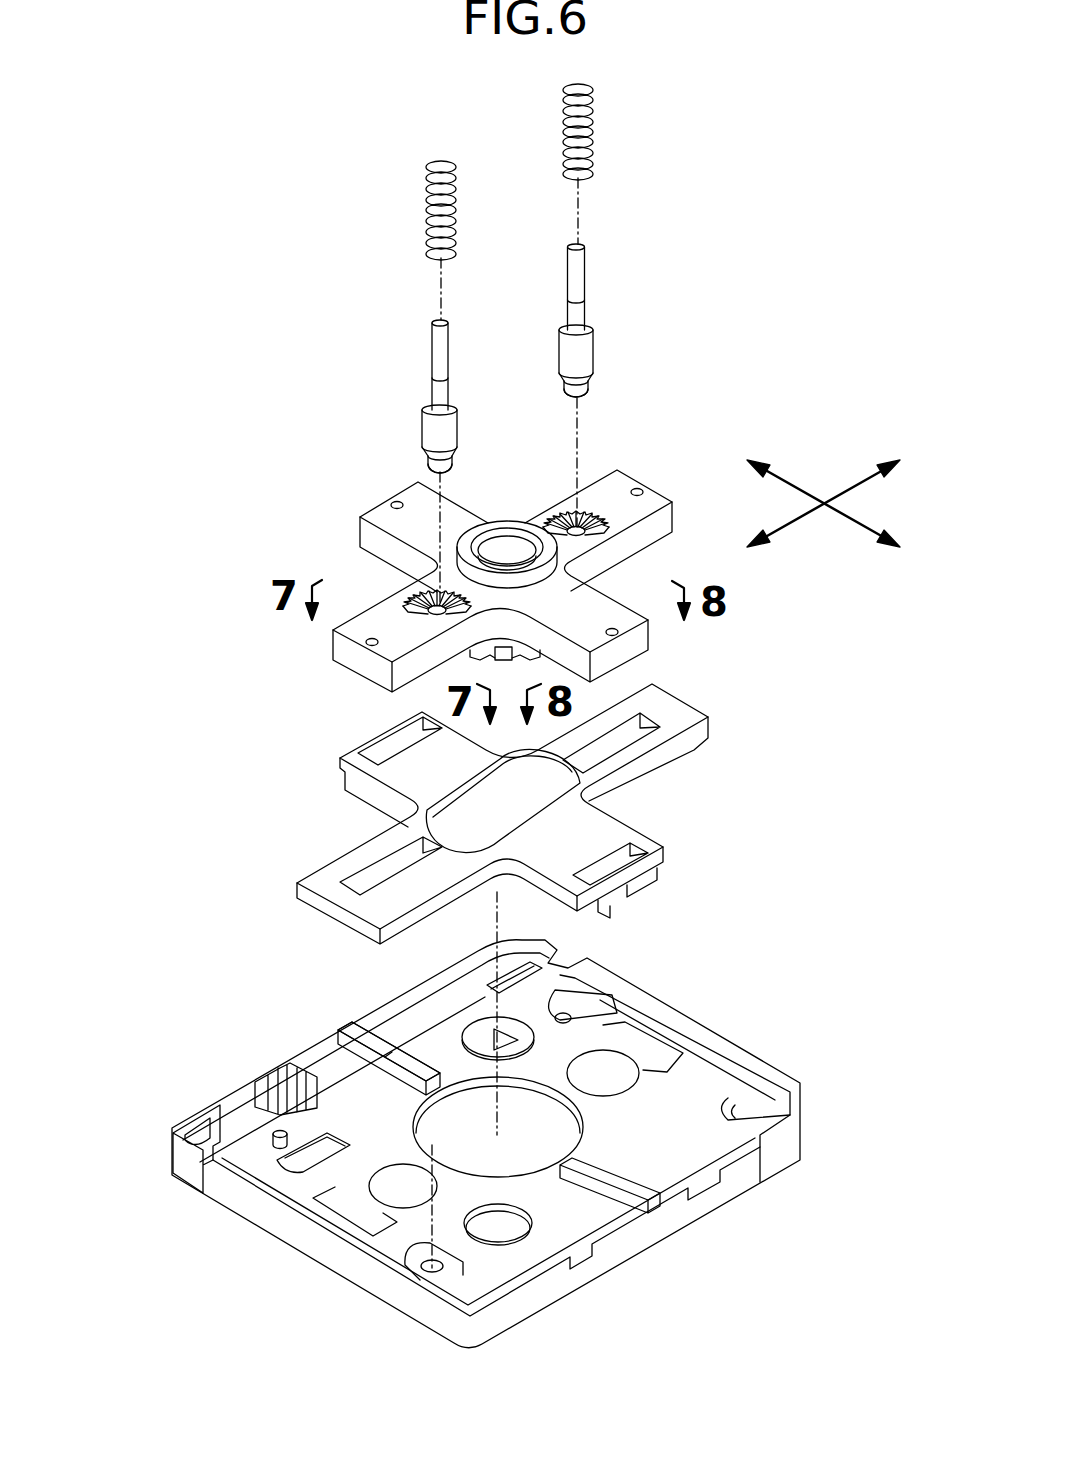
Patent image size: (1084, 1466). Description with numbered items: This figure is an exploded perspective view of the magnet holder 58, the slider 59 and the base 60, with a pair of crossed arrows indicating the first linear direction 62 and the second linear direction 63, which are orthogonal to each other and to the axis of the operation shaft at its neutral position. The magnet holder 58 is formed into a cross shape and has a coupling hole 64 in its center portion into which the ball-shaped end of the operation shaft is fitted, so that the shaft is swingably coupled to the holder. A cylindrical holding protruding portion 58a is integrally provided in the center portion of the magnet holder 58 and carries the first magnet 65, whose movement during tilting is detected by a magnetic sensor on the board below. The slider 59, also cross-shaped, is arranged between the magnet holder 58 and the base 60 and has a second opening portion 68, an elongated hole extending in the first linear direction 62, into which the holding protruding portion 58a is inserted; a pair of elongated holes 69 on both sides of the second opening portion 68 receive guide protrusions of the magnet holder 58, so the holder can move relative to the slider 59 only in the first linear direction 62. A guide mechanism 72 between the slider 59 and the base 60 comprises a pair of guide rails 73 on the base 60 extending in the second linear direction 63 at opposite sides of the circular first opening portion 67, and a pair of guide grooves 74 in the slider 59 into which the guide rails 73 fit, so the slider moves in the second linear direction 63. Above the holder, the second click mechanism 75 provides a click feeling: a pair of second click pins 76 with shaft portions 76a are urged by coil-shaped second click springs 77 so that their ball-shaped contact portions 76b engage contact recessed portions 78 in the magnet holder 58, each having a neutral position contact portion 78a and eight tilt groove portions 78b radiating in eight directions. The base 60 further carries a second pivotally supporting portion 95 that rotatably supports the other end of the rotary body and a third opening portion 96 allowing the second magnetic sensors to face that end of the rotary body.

The magnet holder 58 is at (511, 585).
The holding protruding portion 58a is at (467, 652).
The slider 59 is at (520, 801).
The base 60 is at (486, 1144).
The first linear direction 62 is at (851, 490).
The second linear direction 63 is at (853, 527).
The coupling hole 64 is at (507, 545).
The first magnet 65 is at (506, 648).
The first opening portion 67 is at (570, 1117).
The second opening portion 68 is at (483, 832).
The elongated holes 69 is at (648, 715).
The guide mechanism 72 is at (405, 1047).
The guide rails 73 is at (353, 1057).
The guide grooves 74 is at (623, 886).
The second click mechanism 75 is at (588, 268).
The second click pins 76 is at (502, 358).
The shaft portions 76a is at (442, 362).
The ball-shaped contact portion 76b is at (437, 466).
The second click springs 77 is at (427, 227).
The contact recessed portions 78 is at (502, 549).
The neutral position contact portion 78a is at (337, 658).
The tilt groove portions 78b is at (452, 592).
The second pivotally supporting portion 95 is at (275, 1130).
The third opening portion 96 is at (313, 1140).